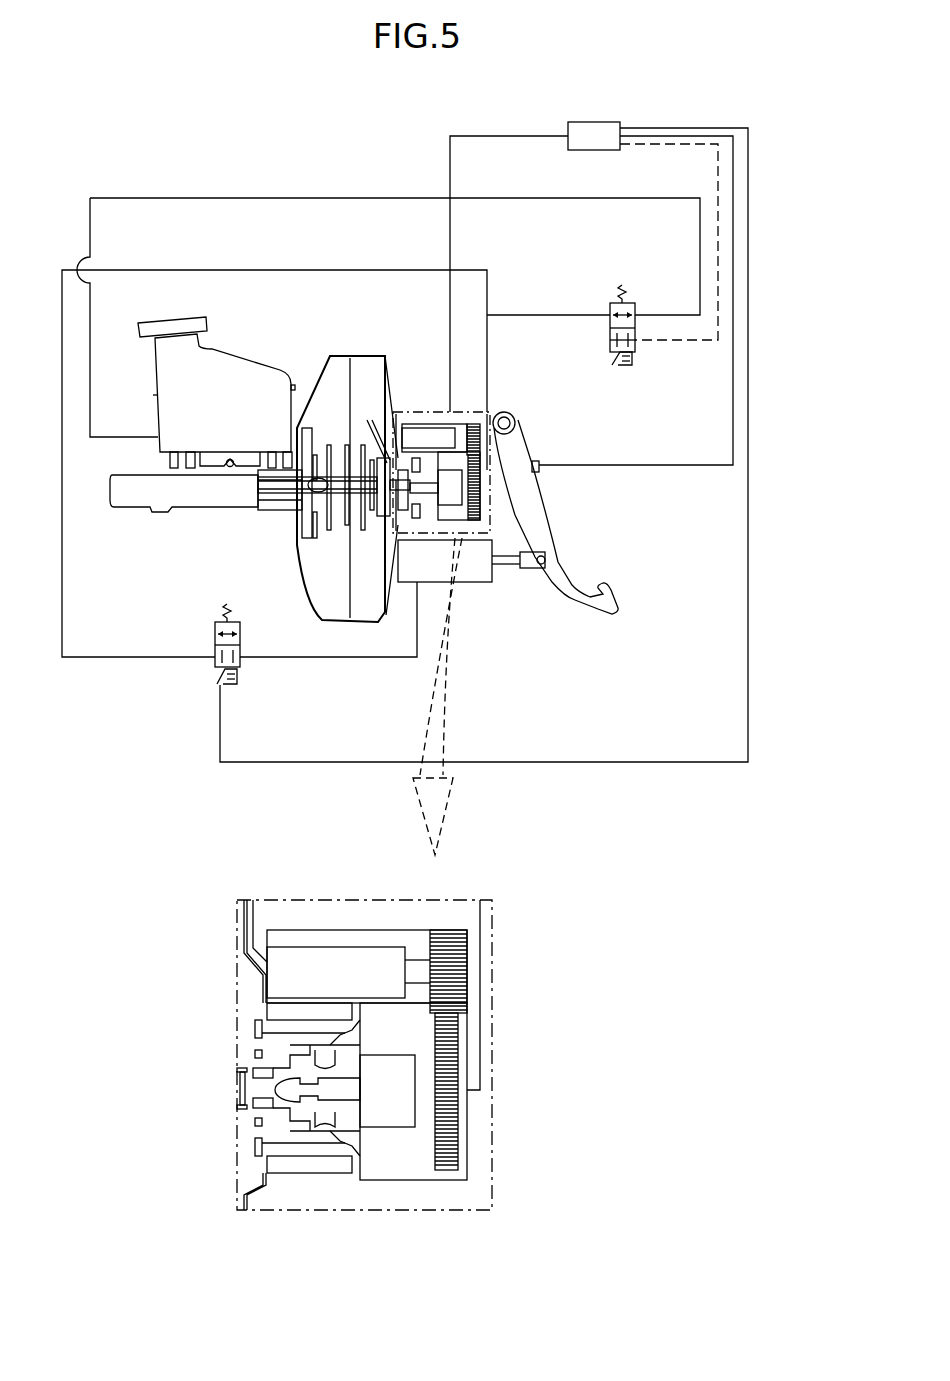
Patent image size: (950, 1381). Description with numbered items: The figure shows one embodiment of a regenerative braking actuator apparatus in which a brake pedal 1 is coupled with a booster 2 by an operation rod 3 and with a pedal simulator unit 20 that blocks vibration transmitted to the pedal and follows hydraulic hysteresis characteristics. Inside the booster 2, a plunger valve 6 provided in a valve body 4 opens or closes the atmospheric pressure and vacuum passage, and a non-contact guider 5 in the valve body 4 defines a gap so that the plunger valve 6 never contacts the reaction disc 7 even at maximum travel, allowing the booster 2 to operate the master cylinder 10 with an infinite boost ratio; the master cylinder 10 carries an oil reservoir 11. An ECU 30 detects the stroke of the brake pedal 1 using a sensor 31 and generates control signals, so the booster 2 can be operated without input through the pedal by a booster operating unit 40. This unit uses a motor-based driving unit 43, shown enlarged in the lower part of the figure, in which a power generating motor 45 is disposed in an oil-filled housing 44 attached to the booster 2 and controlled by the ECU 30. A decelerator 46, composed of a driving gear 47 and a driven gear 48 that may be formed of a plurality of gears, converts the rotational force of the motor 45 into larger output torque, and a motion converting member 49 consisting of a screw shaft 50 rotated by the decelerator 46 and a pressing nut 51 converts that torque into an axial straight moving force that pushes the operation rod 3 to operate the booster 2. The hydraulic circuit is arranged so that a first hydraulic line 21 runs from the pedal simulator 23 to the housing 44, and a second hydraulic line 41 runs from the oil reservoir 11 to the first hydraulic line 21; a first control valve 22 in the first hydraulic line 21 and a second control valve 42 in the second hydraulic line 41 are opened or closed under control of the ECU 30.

The brake pedal 1 is at (518, 437).
The booster 2 is at (326, 373).
The operation rod 3 is at (447, 485).
The valve body 4 is at (420, 457).
The non-contact guider 5 is at (392, 470).
The plunger valve 6 is at (265, 1090).
The reaction disc 7 is at (378, 465).
The master cylinder 10 is at (200, 493).
The oil reservoir 11 is at (233, 372).
The pedal simulator unit 20 is at (124, 690).
The first hydraulic line 21 is at (490, 330).
The first control valve 22 is at (247, 674).
The pedal simulator 23 is at (477, 578).
The ECU 30 is at (593, 120).
The sensor 31 is at (537, 460).
The booster operating unit 40 is at (596, 262).
The second hydraulic line 41 is at (700, 250).
The second control valve 42 is at (611, 312).
The motor-based driving unit 43 is at (458, 425).
The housing 44 is at (336, 930).
The motor 45 is at (307, 960).
The decelerator 46 is at (590, 1016).
The driving gear 47 is at (455, 990).
The driven gear 48 is at (455, 1052).
The motion converting member 49 is at (378, 1287).
The screw shaft 50 is at (425, 1110).
The pressing nut 51 is at (395, 1118).